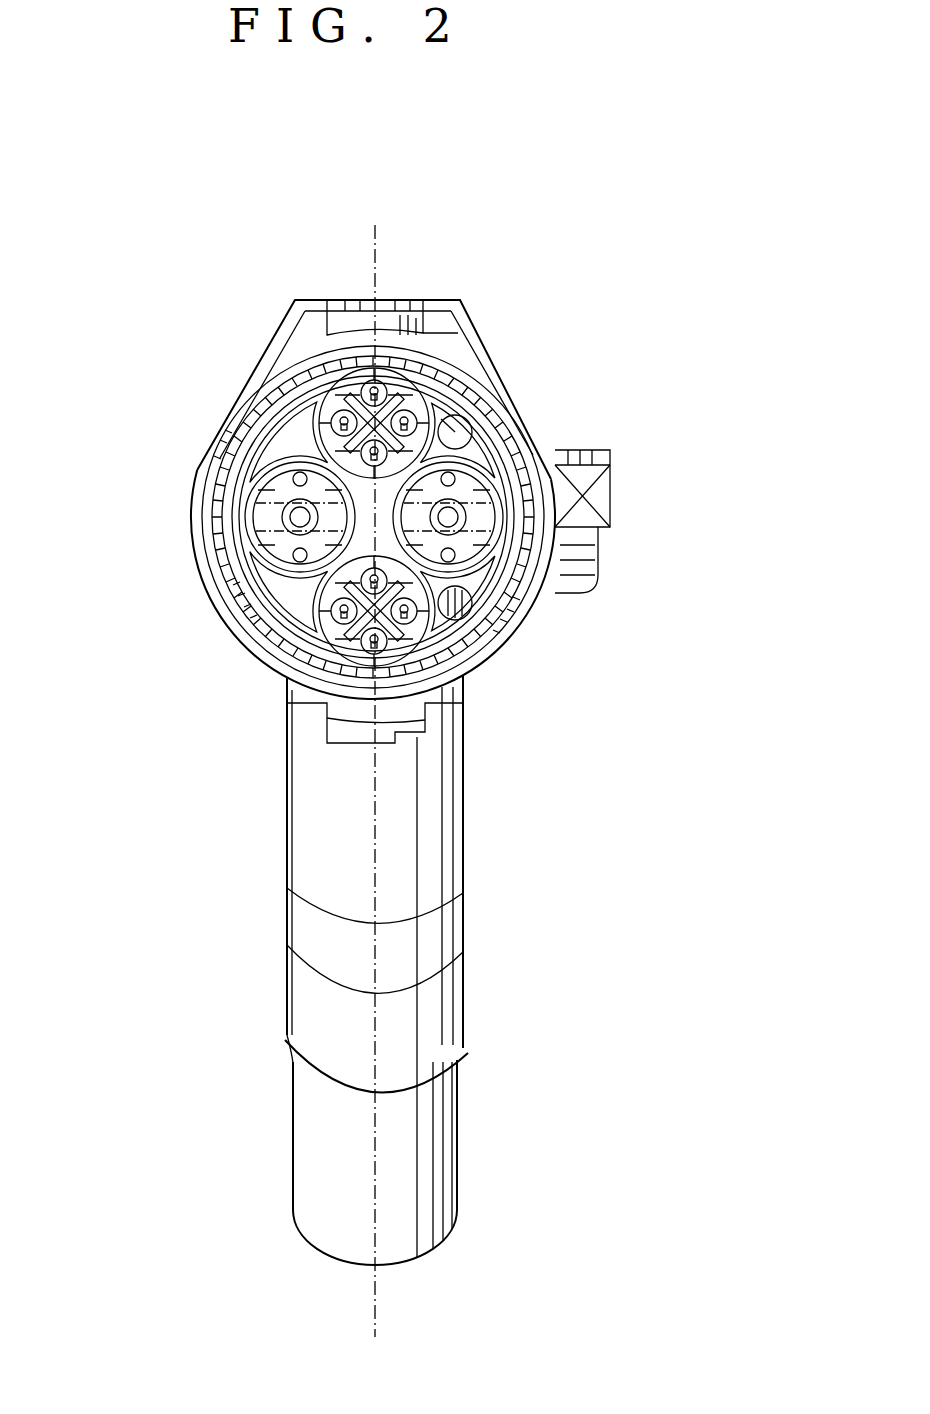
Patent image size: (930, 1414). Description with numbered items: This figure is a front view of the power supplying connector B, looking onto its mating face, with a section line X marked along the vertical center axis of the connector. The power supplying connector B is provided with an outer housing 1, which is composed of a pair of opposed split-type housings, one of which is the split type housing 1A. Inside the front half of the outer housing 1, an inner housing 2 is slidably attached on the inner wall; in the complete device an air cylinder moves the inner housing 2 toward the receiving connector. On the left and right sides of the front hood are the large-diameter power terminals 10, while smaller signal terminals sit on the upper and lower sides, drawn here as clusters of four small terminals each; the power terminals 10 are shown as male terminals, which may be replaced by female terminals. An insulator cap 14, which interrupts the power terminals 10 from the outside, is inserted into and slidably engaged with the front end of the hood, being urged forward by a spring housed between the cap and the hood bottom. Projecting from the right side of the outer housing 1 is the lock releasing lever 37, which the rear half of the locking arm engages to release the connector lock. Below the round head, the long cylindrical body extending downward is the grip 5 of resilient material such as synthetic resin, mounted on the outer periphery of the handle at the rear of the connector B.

The outer housing 1 is at (220, 417).
The split type housing 1A is at (190, 490).
The inner housing 2 is at (247, 637).
The grip 5 is at (426, 816).
The power terminal 10 is at (300, 517).
The insulator cap 14 is at (494, 620).
The lock releasing lever 37 is at (588, 590).
The power supplying connector B is at (232, 290).
The section line X is at (375, 223).